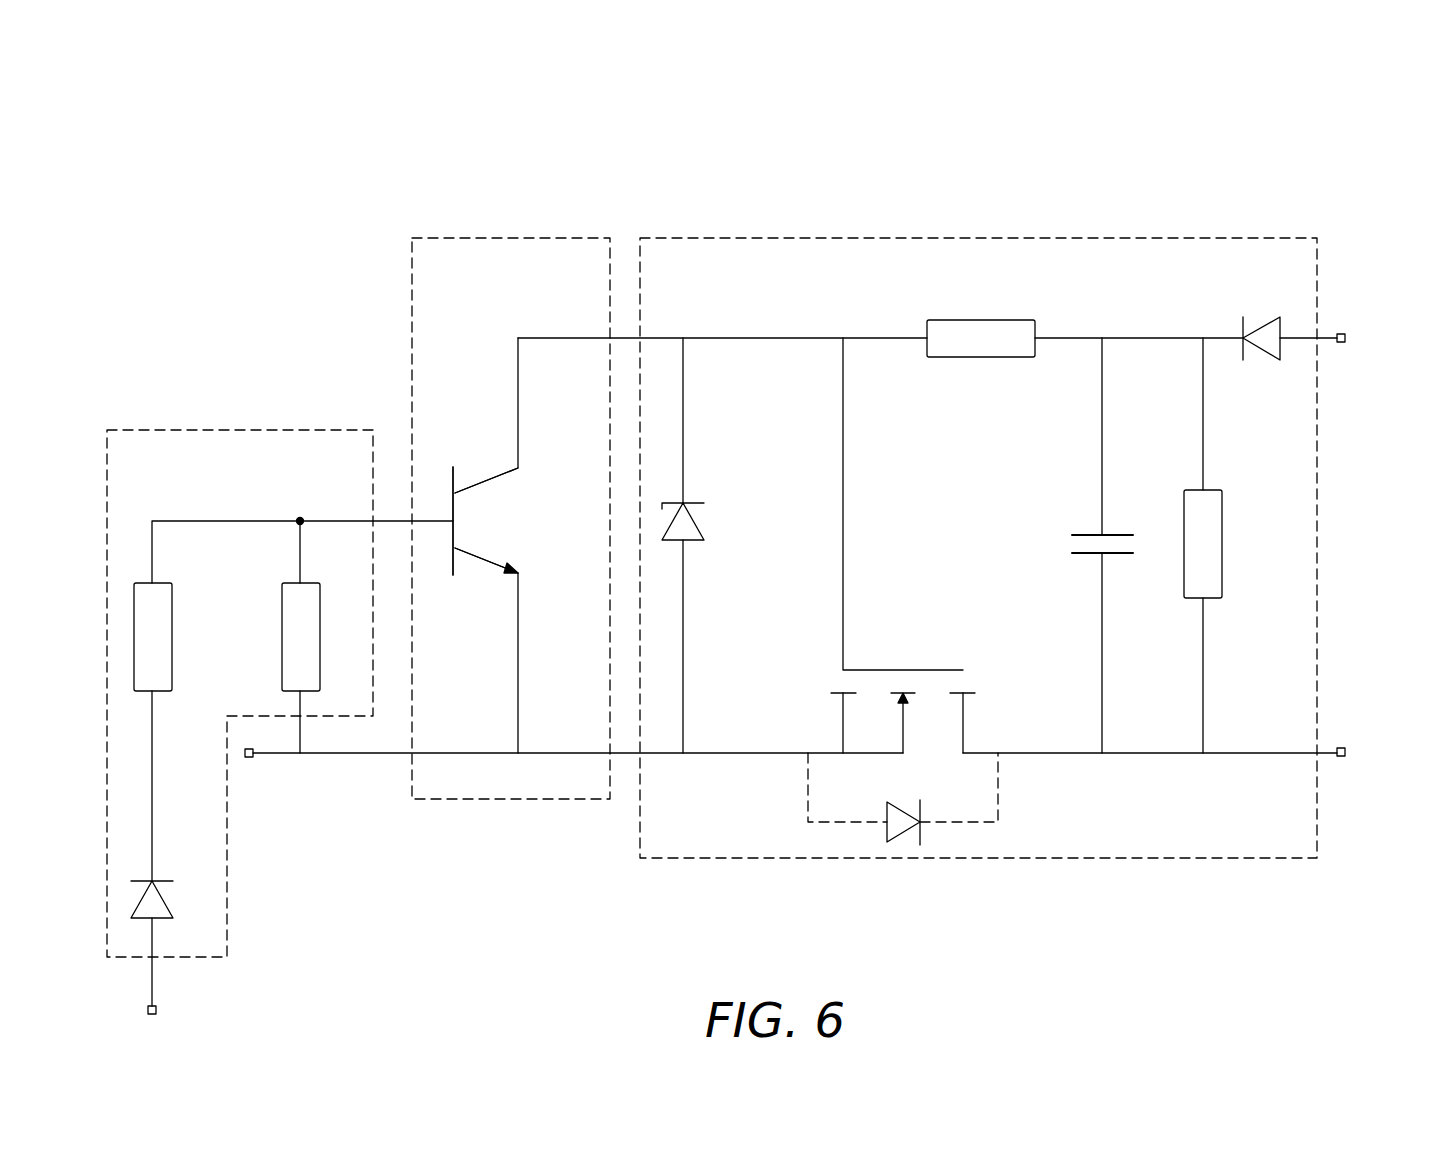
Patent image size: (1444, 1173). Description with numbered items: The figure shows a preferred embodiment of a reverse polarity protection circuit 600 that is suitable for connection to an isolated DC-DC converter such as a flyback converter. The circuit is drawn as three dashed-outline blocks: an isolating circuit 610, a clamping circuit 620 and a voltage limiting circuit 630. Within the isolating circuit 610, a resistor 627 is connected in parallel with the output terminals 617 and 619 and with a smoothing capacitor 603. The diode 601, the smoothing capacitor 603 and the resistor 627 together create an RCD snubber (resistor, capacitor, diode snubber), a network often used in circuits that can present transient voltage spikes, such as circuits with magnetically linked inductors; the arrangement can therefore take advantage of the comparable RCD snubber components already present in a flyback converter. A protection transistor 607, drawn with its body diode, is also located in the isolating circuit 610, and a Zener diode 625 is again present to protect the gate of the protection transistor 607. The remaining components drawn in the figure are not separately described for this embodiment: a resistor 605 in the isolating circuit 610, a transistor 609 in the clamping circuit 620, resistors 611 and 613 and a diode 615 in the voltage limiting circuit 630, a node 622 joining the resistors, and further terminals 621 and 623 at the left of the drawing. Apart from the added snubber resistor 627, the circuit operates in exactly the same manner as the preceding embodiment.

The reverse polarity protection circuit 600 is at (1164, 197).
The diode 601 is at (1262, 328).
The smoothing capacitor 603 is at (1070, 545).
The resistor 605 is at (978, 318).
The protection transistor 607 is at (930, 668).
The bipolar transistor 609 is at (515, 521).
The isolating circuit 610 is at (668, 236).
The resistor 611 is at (282, 658).
The resistor 613 is at (173, 598).
The diode 615 is at (170, 905).
The output terminal 617 is at (1347, 338).
The output terminal 619 is at (1347, 752).
The clamping circuit 620 is at (440, 236).
The terminal 621 is at (158, 1010).
The node 622 is at (300, 516).
The terminal 623 is at (245, 752).
The Zener diode 625 is at (700, 521).
The resistor 627 is at (1222, 543).
The voltage limiting circuit 630 is at (140, 428).